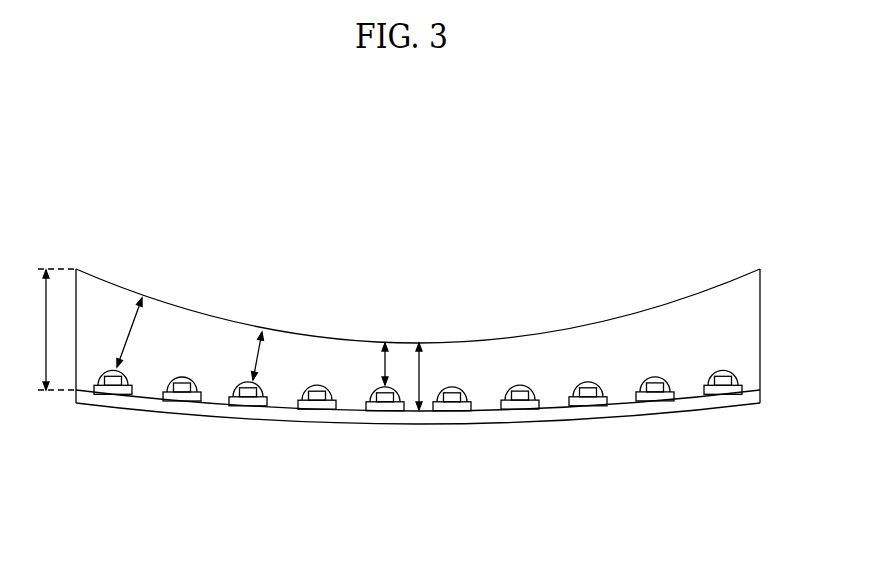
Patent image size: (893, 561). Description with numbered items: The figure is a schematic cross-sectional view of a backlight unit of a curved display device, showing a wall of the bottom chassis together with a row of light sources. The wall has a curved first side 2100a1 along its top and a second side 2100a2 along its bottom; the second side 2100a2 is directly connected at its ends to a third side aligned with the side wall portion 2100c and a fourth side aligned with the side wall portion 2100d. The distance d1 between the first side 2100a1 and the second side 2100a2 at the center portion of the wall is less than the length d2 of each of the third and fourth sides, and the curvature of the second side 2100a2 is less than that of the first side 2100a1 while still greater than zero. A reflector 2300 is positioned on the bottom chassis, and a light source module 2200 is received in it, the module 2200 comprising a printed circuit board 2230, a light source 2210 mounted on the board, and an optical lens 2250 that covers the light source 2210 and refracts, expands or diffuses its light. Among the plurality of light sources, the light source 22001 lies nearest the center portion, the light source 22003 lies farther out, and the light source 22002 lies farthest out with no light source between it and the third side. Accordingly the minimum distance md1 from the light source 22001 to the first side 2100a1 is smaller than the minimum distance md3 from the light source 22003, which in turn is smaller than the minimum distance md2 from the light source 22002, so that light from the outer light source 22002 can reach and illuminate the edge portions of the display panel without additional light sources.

The first side 2100a1 is at (475, 341).
The second side 2100a2 is at (313, 425).
The third side wall portion 2100c is at (76, 288).
The fourth side wall portion 2100d is at (762, 288).
The reflector 2300 is at (282, 402).
The light source module 2200 is at (585, 454).
The light source 2210 is at (587, 436).
The printed circuit board 2230 is at (576, 405).
The optical lens 2250 is at (605, 387).
The light source 22001 is at (382, 411).
The light source 22002 is at (115, 394).
The light source 22003 is at (245, 406).
The center height d1 is at (432, 376).
The edge height d2 is at (47, 329).
The minimum distance md1 is at (360, 364).
The minimum distance md2 is at (112, 332).
The minimum distance md3 is at (233, 356).